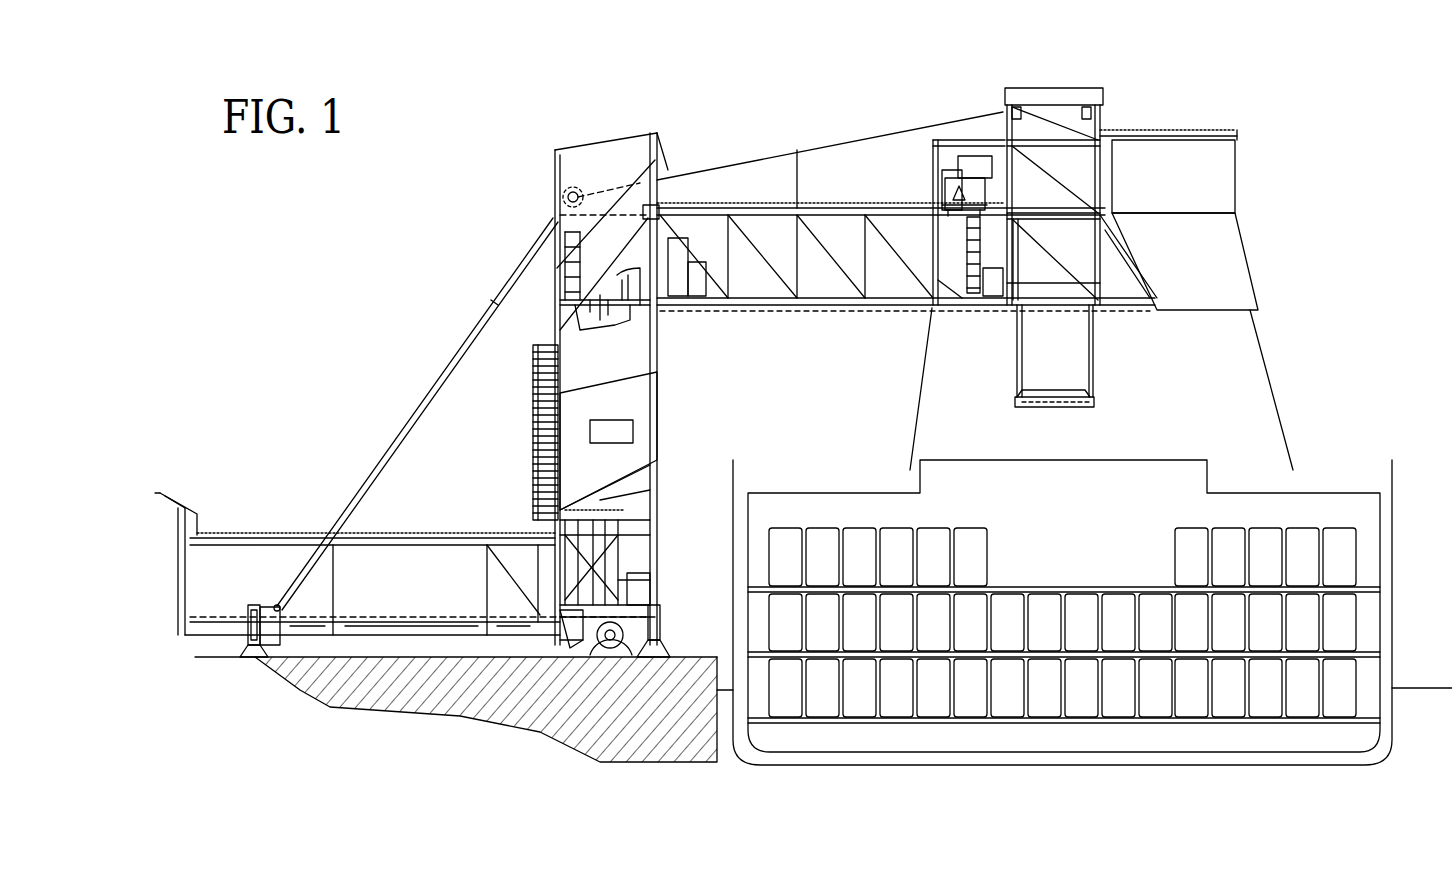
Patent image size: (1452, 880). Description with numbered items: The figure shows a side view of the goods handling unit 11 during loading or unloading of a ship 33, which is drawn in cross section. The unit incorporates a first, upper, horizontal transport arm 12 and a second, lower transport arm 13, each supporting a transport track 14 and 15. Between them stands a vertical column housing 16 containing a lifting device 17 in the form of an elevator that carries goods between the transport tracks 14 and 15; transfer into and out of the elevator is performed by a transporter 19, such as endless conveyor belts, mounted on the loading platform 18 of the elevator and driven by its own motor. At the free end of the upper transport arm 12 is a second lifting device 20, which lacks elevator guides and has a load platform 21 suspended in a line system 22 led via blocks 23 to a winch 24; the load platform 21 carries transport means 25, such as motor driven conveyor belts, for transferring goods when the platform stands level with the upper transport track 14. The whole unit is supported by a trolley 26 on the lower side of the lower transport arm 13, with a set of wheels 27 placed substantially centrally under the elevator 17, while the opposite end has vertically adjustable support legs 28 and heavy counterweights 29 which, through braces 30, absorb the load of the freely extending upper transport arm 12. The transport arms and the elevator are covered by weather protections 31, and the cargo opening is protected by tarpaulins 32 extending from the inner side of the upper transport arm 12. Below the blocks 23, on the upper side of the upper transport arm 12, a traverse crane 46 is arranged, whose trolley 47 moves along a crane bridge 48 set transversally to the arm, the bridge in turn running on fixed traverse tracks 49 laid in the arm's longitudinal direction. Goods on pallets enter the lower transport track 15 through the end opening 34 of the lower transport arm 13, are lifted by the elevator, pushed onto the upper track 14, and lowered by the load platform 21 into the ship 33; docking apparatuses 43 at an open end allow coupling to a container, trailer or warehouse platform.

The goods handling unit 11 is at (807, 106).
The upper transport arm 12 is at (1246, 110).
The lower transport arm 13 is at (312, 534).
The transport track 14 is at (817, 306).
The transport track 15 is at (380, 618).
The column housing 16 is at (660, 400).
The lifting device 17 is at (638, 496).
The loading platform 18 is at (637, 648).
The transporter 19 is at (568, 630).
The second lifting device 20 is at (1066, 100).
The load platform 21 is at (1072, 407).
The line system 22 is at (1017, 350).
The blocks 23 is at (1012, 108).
The winch 24 is at (562, 194).
The transport means 25 is at (1040, 410).
The trolley 26 is at (465, 633).
The set of wheels 27 is at (606, 652).
The support legs 28 is at (251, 658).
The counterweights 29 is at (270, 637).
The braces 30 is at (445, 361).
The weather protections 31 is at (1233, 255).
The tarpaulins 32 is at (918, 373).
The ship 33 is at (1327, 487).
The end opening 34 is at (190, 572).
The docking apparatuses 43 is at (163, 624).
The traverse crane 46 is at (966, 152).
The trolley 47 is at (956, 165).
The crane bridge 48 is at (931, 190).
The traverse tracks 49 is at (1040, 210).